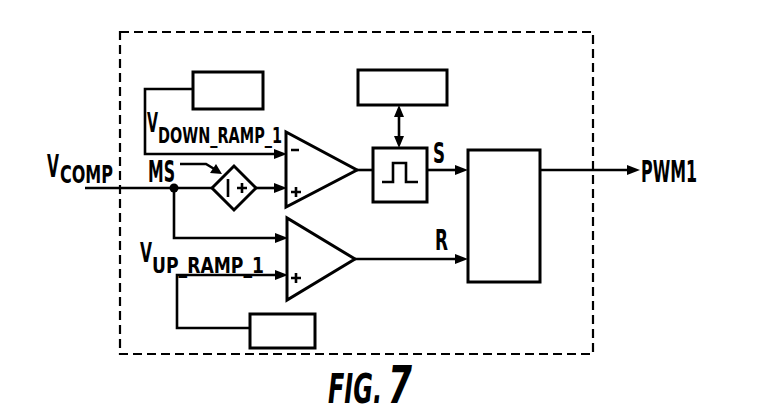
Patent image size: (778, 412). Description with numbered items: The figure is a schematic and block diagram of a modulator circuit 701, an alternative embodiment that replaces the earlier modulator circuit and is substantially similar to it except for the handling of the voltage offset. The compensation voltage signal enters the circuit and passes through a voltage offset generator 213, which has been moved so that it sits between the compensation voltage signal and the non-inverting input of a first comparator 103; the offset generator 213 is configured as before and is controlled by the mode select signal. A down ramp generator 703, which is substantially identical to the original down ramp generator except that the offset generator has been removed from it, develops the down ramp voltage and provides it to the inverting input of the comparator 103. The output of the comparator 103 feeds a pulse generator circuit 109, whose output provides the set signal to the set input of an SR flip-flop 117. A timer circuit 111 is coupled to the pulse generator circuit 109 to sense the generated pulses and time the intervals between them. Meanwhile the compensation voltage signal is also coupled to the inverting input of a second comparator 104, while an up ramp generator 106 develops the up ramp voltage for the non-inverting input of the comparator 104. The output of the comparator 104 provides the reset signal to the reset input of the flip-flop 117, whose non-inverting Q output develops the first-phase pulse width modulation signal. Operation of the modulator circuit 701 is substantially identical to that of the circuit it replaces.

The modulator circuit 701 is at (119, 63).
The down ramp generator 703 is at (216, 115).
The voltage offset generator 213 is at (225, 202).
The first comparator 103 is at (329, 169).
The second comparator 104 is at (321, 259).
The up ramp generator 106 is at (246, 309).
The pulse generator circuit 109 is at (370, 200).
The timer circuit 111 is at (412, 69).
The SR flip-flop 117 is at (488, 148).